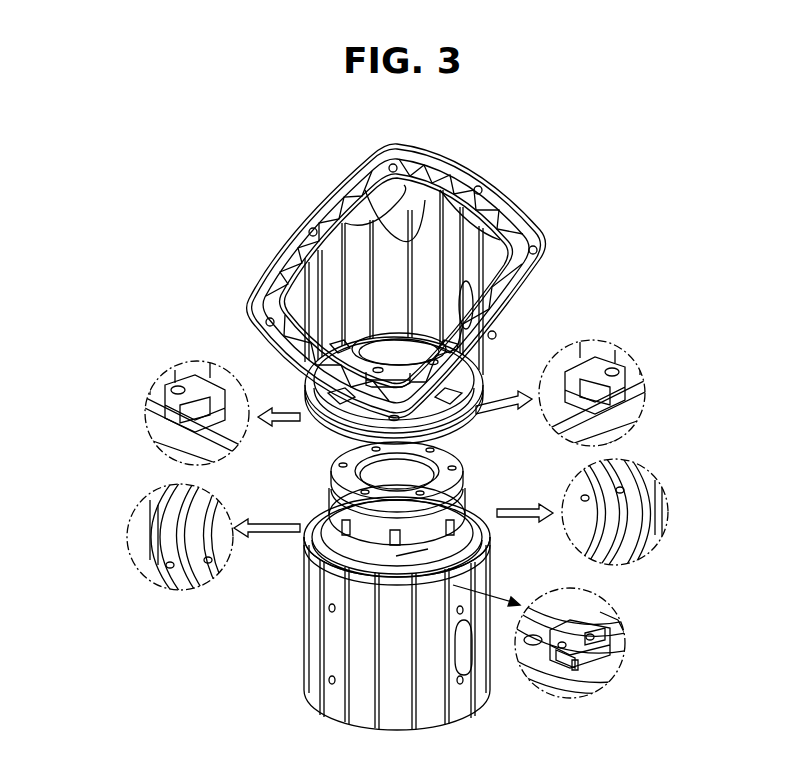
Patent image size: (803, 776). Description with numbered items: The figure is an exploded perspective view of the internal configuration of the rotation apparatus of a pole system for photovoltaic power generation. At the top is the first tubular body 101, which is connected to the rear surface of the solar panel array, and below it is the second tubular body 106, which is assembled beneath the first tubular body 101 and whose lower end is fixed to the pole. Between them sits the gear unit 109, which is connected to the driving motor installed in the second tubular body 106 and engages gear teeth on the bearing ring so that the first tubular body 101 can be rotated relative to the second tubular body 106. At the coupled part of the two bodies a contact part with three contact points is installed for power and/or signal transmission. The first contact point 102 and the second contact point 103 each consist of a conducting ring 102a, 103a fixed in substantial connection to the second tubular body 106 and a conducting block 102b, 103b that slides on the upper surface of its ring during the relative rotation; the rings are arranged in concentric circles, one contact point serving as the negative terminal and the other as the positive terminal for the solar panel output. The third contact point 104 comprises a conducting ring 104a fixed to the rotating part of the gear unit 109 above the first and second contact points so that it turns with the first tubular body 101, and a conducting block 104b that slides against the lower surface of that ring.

The first tubular body 101 is at (362, 268).
The first contact point 102 is at (657, 453).
The conducting ring 102a is at (607, 515).
The conducting block 102b is at (625, 408).
The second contact point 103 is at (136, 476).
The conducting ring 103a is at (175, 518).
The conducting block 103b is at (185, 425).
The third contact point 104 is at (619, 660).
The conducting ring 104a is at (592, 665).
The conducting block 104b is at (600, 648).
The second tubular body 106 is at (315, 625).
The gear unit 109 is at (470, 459).